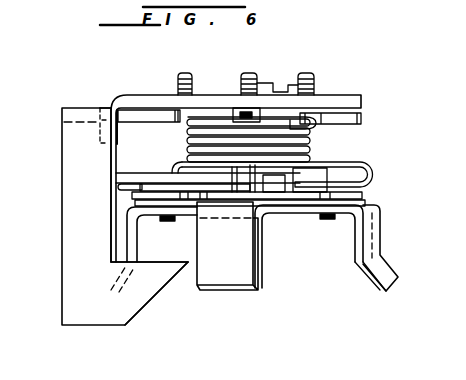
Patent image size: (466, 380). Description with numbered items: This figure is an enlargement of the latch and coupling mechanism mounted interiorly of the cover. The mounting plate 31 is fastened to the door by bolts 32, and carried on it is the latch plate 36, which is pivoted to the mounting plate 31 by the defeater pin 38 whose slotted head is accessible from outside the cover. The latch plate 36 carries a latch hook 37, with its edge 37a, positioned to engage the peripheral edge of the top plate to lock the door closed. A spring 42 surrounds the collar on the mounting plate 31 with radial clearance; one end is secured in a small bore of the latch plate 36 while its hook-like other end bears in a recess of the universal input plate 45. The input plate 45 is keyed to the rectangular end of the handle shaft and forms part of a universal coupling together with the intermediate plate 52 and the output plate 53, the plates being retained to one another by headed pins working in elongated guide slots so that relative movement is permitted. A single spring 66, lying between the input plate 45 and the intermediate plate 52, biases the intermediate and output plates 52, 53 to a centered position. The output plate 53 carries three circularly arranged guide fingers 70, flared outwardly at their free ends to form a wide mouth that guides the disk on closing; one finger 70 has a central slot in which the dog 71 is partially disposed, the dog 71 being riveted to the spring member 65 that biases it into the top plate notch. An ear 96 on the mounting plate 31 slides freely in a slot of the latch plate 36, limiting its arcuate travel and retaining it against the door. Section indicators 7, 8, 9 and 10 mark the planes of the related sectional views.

The section line 7- 7 is at (33, 337).
The section line 8- 8 is at (34, 190).
The section line 9- 9 is at (95, 163).
The section line 10- 10 is at (95, 190).
The mounting plate 31 is at (158, 95).
The bolts 32 is at (192, 79).
The latch plate 36 is at (105, 110).
The latch hook 37 is at (170, 278).
The inclined edge of mounting plate 37a is at (150, 305).
The defeater pin 38 is at (268, 82).
The spring 42 is at (312, 138).
The universal input plate 45 is at (162, 173).
The intermediate plate 52 is at (192, 199).
The output plate 53 is at (300, 222).
The spring member 65 is at (383, 254).
The spring 66 is at (132, 191).
The guide fingers 70 is at (132, 242).
The dog 71 is at (358, 266).
The ear 96 is at (119, 129).